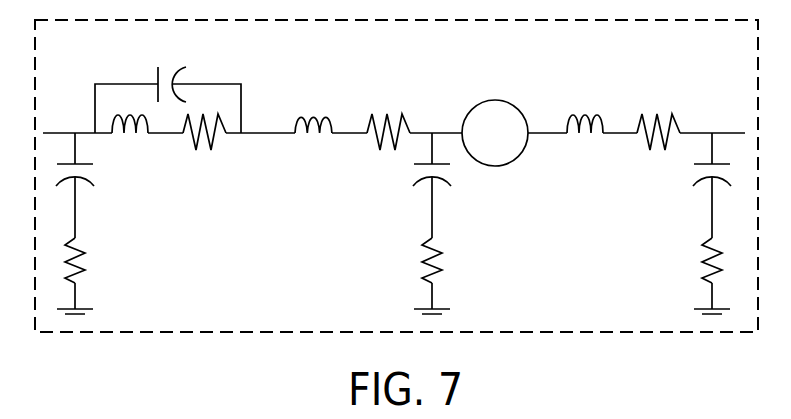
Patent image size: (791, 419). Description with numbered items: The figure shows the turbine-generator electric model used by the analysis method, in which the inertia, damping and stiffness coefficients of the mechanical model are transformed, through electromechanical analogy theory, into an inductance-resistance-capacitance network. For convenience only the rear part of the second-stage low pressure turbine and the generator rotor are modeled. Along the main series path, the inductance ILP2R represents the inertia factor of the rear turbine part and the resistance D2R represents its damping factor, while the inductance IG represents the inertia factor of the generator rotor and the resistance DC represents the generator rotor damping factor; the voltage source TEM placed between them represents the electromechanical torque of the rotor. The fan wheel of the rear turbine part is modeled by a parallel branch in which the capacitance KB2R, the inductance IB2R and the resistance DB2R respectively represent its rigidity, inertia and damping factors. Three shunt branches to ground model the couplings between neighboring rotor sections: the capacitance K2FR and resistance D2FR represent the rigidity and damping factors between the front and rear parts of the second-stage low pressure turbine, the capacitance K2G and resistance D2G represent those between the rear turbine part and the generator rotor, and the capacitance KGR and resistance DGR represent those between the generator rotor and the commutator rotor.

The inductance IB2R is at (136, 141).
The resistance DB2R is at (208, 148).
The capacitance KB2R is at (173, 68).
The capacitance K2FR is at (107, 192).
The resistance D2FR is at (101, 260).
The inductance ILP2R is at (317, 106).
The resistance D2R is at (388, 115).
The voltage source TEM is at (495, 133).
The inductance IG is at (585, 107).
The resistance DC is at (658, 115).
The capacitance K2G is at (460, 191).
The resistance D2G is at (453, 260).
The capacitance KGR is at (689, 192).
The resistance DGR is at (685, 260).